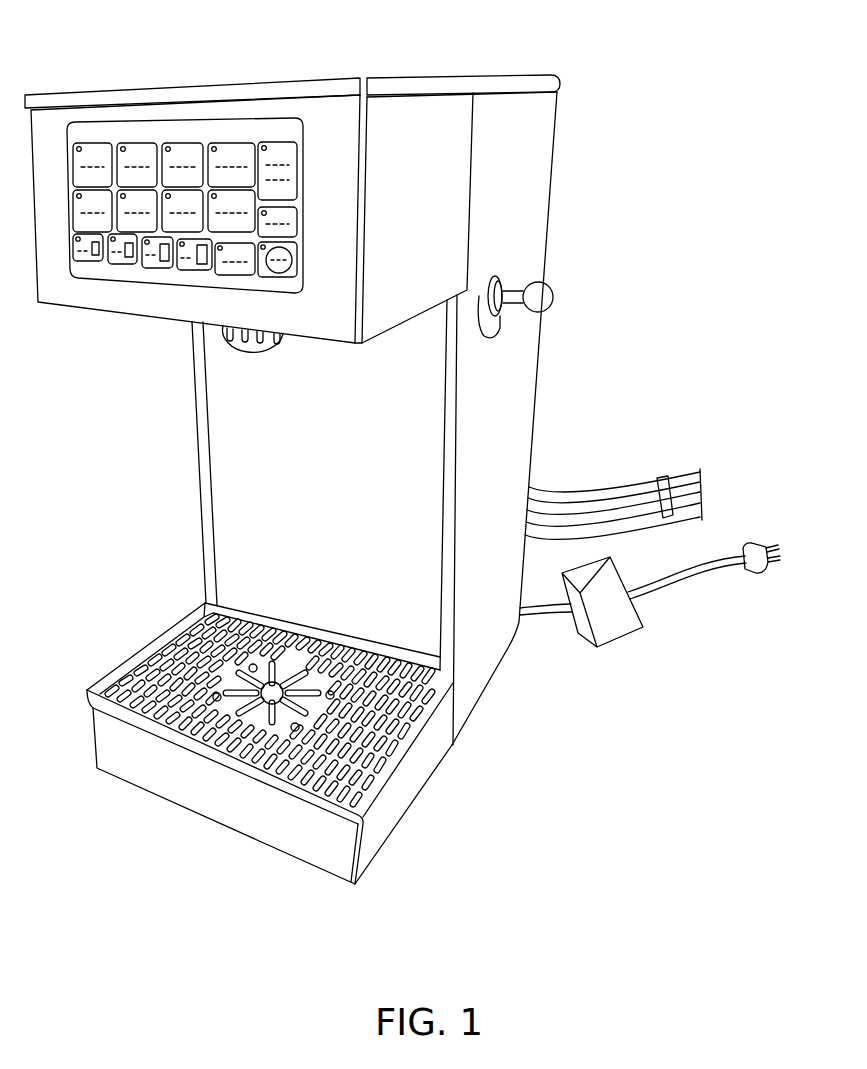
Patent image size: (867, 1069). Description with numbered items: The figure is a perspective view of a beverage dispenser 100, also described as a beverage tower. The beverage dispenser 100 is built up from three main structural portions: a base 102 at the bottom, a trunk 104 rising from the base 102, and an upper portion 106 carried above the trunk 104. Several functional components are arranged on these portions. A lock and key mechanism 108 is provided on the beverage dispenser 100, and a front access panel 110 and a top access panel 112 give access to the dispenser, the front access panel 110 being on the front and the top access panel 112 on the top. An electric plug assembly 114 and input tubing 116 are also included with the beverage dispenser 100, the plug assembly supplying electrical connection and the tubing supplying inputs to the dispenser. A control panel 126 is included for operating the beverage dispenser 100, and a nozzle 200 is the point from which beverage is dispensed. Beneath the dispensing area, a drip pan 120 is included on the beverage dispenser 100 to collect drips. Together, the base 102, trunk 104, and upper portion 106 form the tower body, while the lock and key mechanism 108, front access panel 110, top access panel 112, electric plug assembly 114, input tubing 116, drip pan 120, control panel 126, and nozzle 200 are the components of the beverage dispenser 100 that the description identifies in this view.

The beverage dispenser 100 is at (126, 862).
The base 102 is at (302, 832).
The trunk 104 is at (505, 395).
The upper portion 106 is at (450, 188).
The lock and key mechanism 108 is at (505, 280).
The front access panel 110 is at (258, 483).
The top access panel 112 is at (115, 88).
The electric plug assembly 114 is at (623, 633).
The input tubing 116 is at (623, 483).
The drip pan 120 is at (372, 743).
The control panel 126 is at (113, 254).
The nozzle 200 is at (237, 350).